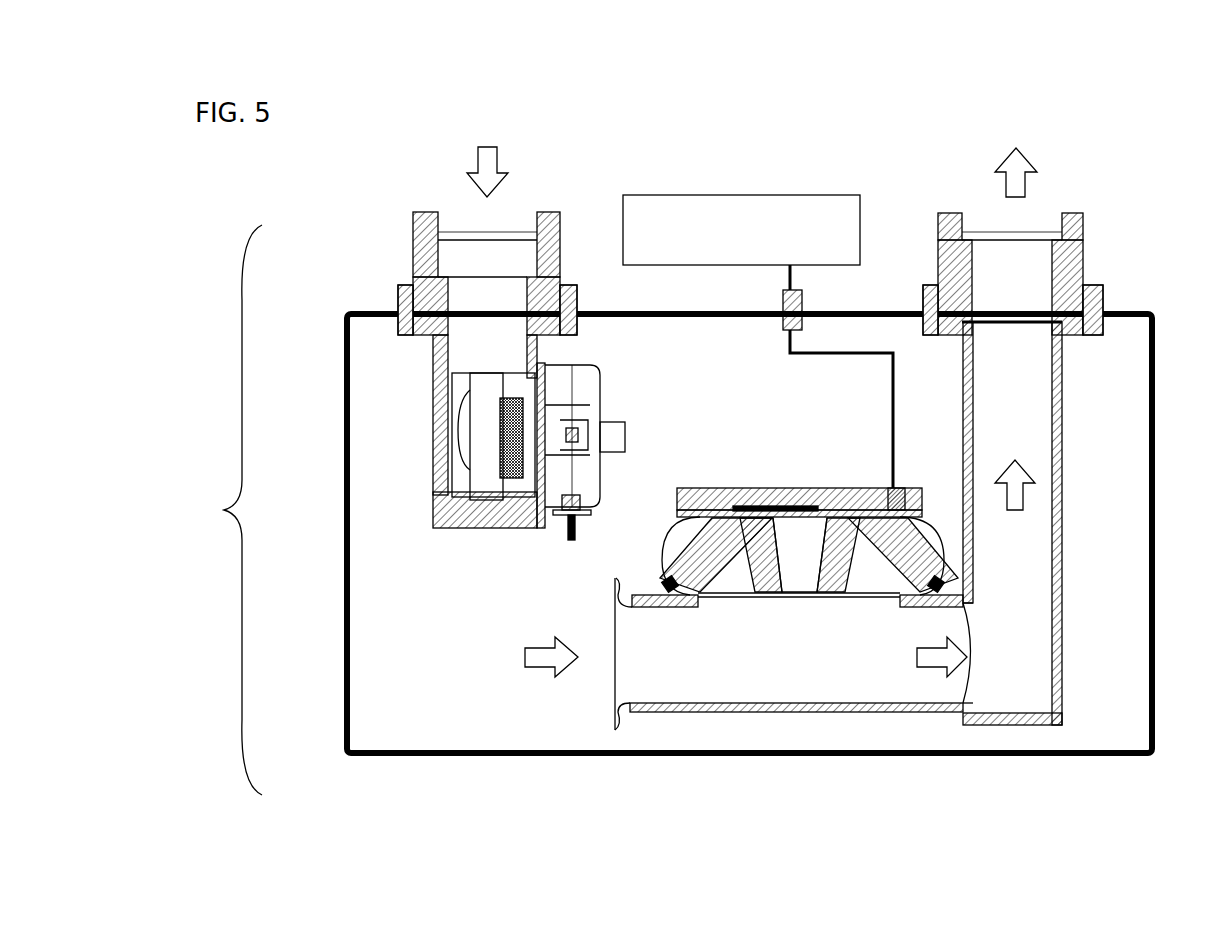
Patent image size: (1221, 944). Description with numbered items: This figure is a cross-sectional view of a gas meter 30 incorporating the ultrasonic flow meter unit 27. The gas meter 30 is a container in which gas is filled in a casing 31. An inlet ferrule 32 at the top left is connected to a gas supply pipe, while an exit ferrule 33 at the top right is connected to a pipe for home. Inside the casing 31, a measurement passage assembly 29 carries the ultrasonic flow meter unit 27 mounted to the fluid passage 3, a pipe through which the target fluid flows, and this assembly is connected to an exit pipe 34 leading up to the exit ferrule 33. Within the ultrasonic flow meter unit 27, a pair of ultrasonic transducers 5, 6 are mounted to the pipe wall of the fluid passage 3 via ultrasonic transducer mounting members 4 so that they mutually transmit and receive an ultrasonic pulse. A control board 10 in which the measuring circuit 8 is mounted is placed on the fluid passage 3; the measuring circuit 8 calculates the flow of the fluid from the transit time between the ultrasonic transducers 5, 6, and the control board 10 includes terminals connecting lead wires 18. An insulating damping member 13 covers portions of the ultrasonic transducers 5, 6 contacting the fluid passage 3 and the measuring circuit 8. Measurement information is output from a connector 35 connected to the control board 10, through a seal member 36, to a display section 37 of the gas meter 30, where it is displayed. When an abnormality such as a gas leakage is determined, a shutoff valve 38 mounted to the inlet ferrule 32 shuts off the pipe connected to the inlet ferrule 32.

The fluid passage 3 is at (645, 598).
The ultrasonic transducer mounting member 4 is at (772, 577).
The ultrasonic transducer 5 is at (690, 540).
The ultrasonic transducer 6 is at (890, 540).
The measuring circuit 8 is at (800, 505).
The control board 10 is at (706, 490).
The insulating damping member 13 is at (833, 492).
The lead wire 18 is at (664, 572).
The ultrasonic flow meter unit 27 is at (782, 470).
The measurement passage assembly 29 is at (790, 720).
The gas meter 30 is at (222, 510).
The casing 31 is at (1010, 757).
The inlet ferrule 32 is at (420, 258).
The exit ferrule 33 is at (1082, 262).
The exit pipe 34 is at (1066, 500).
The connector 35 is at (905, 490).
The seal member 36 is at (802, 305).
The display section 37 is at (735, 195).
The shutoff valve 38 is at (462, 462).